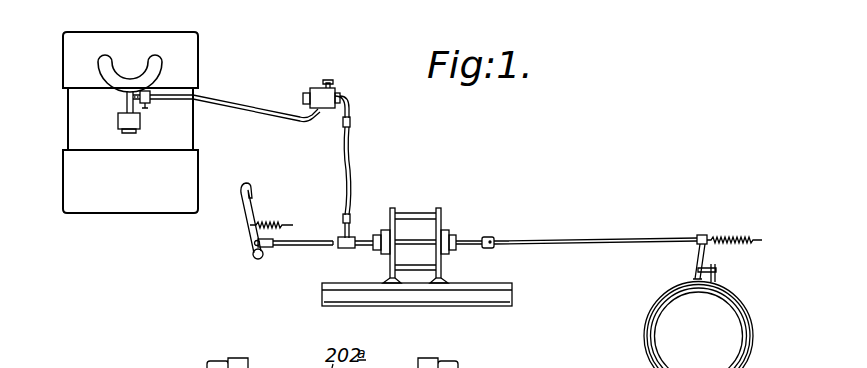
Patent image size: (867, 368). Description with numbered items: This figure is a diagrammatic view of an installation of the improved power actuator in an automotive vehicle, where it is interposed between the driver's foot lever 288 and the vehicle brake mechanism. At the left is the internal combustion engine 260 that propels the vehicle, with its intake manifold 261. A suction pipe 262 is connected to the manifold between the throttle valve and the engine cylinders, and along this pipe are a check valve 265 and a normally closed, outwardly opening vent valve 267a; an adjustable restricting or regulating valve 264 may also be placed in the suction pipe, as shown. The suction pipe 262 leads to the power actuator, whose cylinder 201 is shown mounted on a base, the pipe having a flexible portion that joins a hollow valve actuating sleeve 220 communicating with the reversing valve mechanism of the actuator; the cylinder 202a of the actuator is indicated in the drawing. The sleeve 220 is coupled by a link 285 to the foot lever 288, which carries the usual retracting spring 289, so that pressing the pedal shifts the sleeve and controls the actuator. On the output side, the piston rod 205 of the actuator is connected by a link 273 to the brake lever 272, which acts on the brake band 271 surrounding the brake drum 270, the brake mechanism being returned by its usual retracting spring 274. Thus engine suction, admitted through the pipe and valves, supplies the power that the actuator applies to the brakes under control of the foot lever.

The internal combustion engine 260 is at (196, 72).
The intake manifold 261 is at (114, 89).
The adjustable restricting valve 264 is at (146, 104).
The suction pipe 262 is at (236, 106).
The check valve 265 is at (313, 94).
The vent valve 267a is at (378, 85).
The foot lever 288 is at (243, 224).
The retracting spring 289 is at (280, 217).
The link 285 is at (298, 246).
The hollow valve actuating sleeve 220 is at (354, 248).
The cylinder 201 is at (430, 230).
The cylinder 202a is at (423, 195).
The piston rod 205 is at (468, 246).
The link 273 is at (549, 240).
The retracting spring 274 is at (736, 236).
The brake lever 272 is at (706, 251).
The brake band 271 is at (752, 314).
The brake drum 270 is at (655, 340).